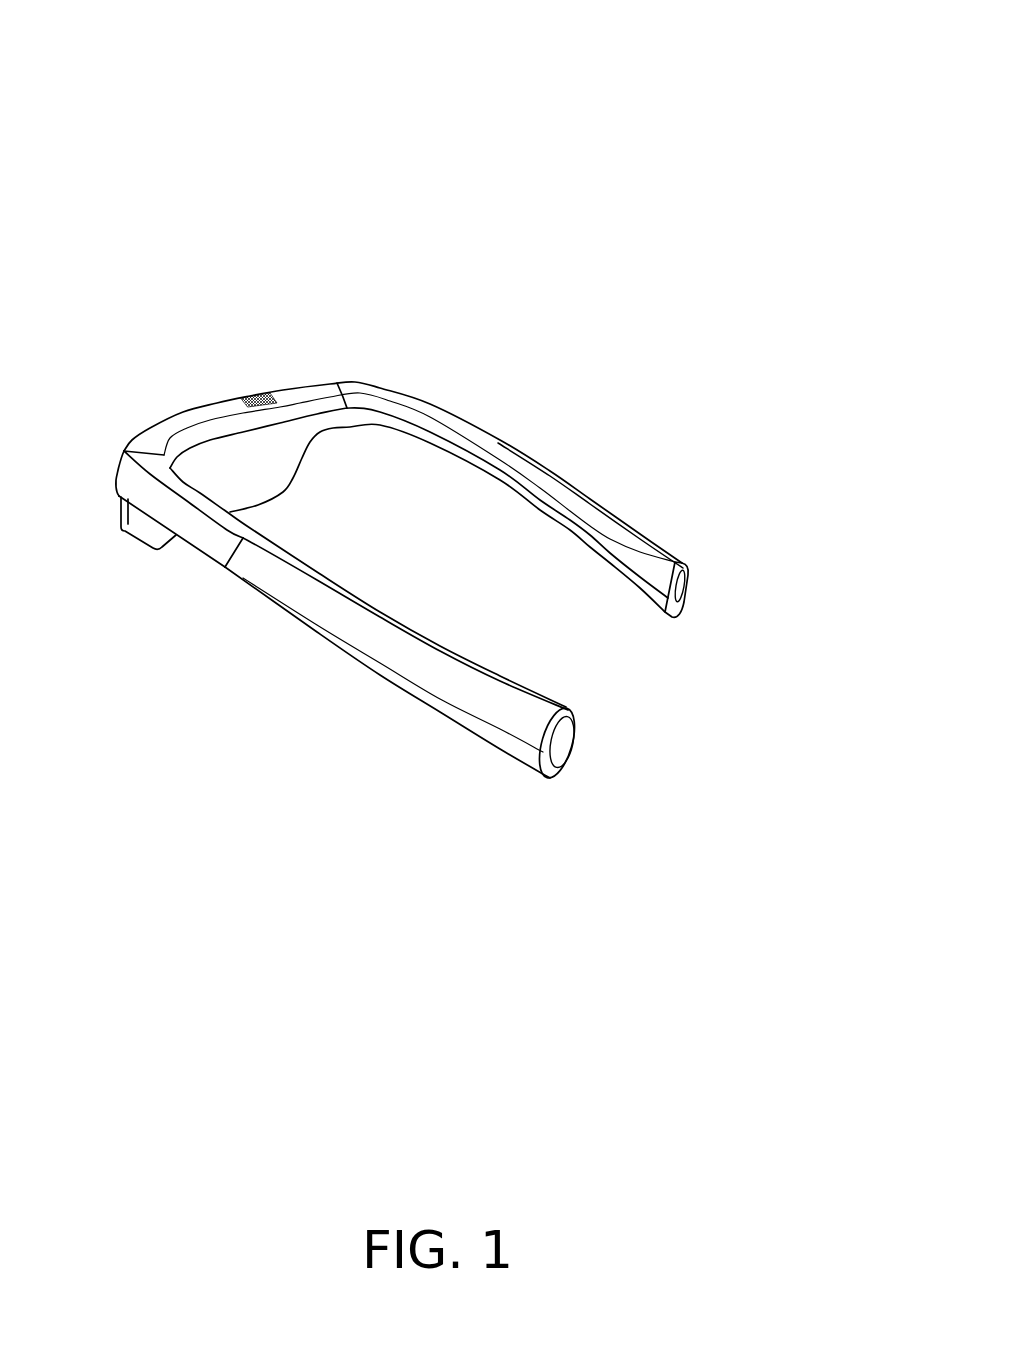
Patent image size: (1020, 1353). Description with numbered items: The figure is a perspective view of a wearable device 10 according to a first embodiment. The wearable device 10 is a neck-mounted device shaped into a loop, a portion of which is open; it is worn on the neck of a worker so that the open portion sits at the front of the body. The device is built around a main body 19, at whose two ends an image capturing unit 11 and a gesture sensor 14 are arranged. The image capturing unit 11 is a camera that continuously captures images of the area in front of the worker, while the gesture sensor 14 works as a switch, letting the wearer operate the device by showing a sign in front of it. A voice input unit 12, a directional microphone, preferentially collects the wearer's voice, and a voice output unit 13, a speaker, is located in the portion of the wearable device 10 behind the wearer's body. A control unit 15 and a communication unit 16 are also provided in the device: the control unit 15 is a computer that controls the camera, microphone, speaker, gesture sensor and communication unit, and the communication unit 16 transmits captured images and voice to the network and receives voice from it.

The wearable device 10 is at (642, 146).
The image capturing unit 11 is at (583, 758).
The voice input unit 12 is at (608, 522).
The voice output unit 13 is at (256, 385).
The gesture sensor 14 is at (693, 565).
The control unit 15 is at (204, 386).
The communication unit 16 is at (159, 393).
The main body 19 is at (449, 385).